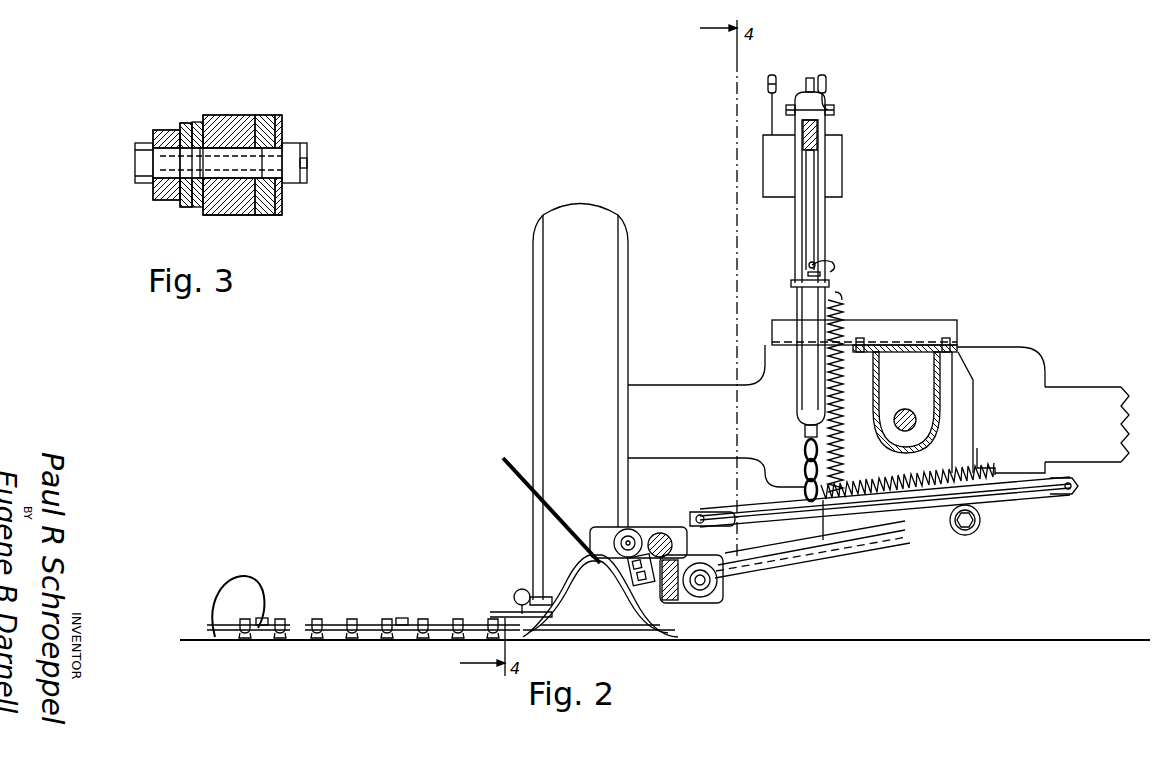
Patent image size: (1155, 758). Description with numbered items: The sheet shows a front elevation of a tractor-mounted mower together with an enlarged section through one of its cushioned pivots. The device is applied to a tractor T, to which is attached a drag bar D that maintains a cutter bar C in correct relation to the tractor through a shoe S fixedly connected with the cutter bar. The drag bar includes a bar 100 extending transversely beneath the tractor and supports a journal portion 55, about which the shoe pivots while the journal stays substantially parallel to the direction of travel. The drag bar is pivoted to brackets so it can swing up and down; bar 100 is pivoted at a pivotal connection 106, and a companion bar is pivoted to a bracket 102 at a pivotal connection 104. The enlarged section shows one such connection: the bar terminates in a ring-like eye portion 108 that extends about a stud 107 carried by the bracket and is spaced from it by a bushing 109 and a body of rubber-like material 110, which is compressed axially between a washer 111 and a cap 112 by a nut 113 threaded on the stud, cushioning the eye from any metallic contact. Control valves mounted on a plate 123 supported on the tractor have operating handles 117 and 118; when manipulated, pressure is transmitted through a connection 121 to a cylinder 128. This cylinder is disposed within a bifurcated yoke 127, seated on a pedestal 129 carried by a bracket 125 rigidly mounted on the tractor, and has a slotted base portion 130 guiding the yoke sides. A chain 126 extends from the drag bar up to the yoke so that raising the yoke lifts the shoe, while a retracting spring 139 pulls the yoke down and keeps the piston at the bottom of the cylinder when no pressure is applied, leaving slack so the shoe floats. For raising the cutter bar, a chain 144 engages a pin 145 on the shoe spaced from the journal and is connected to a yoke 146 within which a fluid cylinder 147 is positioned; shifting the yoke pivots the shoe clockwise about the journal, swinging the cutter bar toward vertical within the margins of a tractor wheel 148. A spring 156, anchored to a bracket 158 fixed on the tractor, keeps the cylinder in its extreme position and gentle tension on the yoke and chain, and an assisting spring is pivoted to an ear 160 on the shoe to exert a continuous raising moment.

In FIG. 3, the bracket 102 is at (163, 130).
In FIG. 3, the pivotal connection 104 is at (228, 115).
In FIG. 3, the stud 107 is at (175, 162).
In FIG. 3, the eye portion 108 is at (245, 215).
In FIG. 3, the bushing 109 is at (197, 206).
In FIG. 3, the rubber-like material 110 is at (268, 115).
In FIG. 3, the washer 111 is at (188, 122).
In FIG. 3, the cap 112 is at (287, 125).
In FIG. 3, the nut 113 is at (295, 192).
In FIG. 2, the operating handle 117 is at (770, 80).
In FIG. 2, the operating handle 118 is at (826, 85).
In FIG. 2, the connection 121 is at (820, 263).
In FIG. 2, the plate 123 is at (840, 158).
In FIG. 2, the bracket 125 is at (780, 327).
In FIG. 2, the chain 126 is at (808, 472).
In FIG. 2, the yoke 127 is at (827, 238).
In FIG. 2, the cylinder 128 is at (816, 198).
In FIG. 2, the pedestal 129 is at (805, 282).
In FIG. 2, the base portion 130 is at (822, 276).
In FIG. 2, the retracting spring 139 is at (846, 308).
In FIG. 2, the chain 144 is at (700, 512).
In FIG. 2, the pin 145 is at (660, 538).
In FIG. 2, the yoke 146 is at (1030, 508).
In FIG. 2, the fluid cylinder 147 is at (1000, 497).
In FIG. 2, the tractor wheel 148 is at (563, 297).
In FIG. 2, the spring 156 is at (905, 487).
In FIG. 2, the bracket 158 is at (988, 466).
In FIG. 2, the ear 160 is at (660, 592).
In FIG. 2, the journal portion 55 is at (718, 578).
In FIG. 2, the bar 100 is at (905, 545).
In FIG. 2, the pivotal connection 106 is at (965, 540).
In FIG. 2, the cutter bar C is at (318, 612).
In FIG. 2, the drag bar D is at (805, 550).
In FIG. 2, the shoe S is at (575, 562).
In FIG. 2, the tractor T is at (1030, 367).